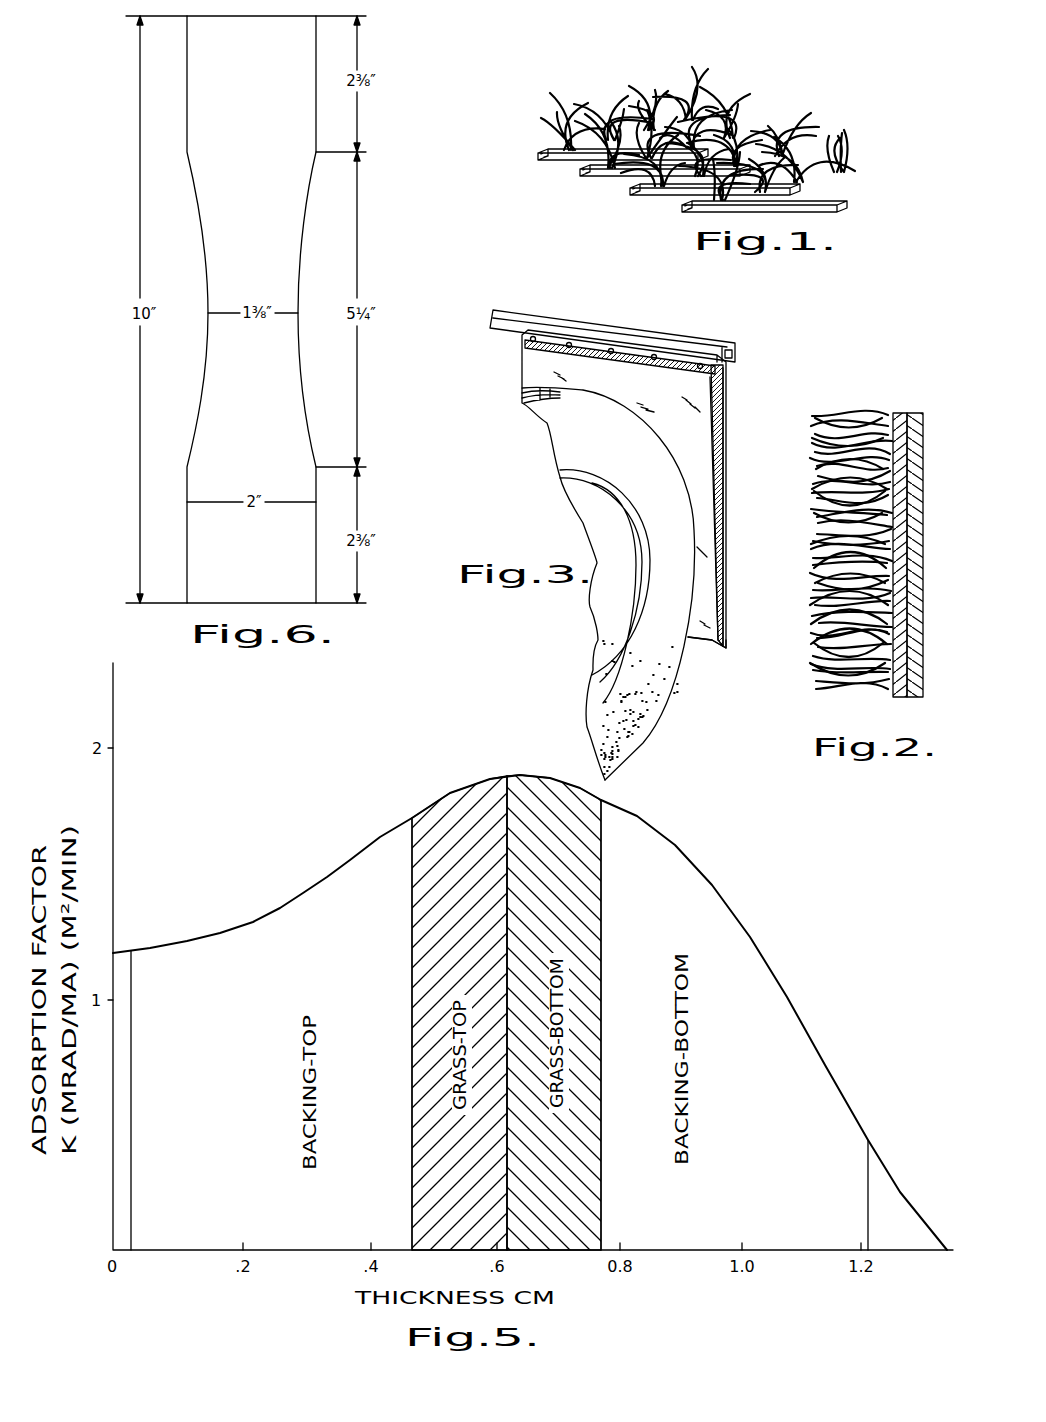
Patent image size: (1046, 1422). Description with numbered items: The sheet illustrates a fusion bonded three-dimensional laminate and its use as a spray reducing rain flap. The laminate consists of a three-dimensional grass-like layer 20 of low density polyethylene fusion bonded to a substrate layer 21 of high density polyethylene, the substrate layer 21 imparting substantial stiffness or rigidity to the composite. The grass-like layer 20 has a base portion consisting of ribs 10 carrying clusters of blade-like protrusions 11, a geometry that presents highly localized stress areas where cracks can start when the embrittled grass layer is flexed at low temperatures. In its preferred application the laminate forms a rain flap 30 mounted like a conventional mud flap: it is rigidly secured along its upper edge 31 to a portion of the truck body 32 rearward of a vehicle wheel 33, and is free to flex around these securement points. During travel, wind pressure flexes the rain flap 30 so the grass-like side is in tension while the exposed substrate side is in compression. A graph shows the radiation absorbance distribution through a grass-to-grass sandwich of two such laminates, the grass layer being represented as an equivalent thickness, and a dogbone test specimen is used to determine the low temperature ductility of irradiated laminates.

In FIG. 1, the ribs 10 is at (746, 197).
In FIG. 1, the blade-like protrusions 11 is at (835, 144).
In FIG. 1, the three-dimensional grass-like layer 20 is at (714, 126).
In FIG. 3, the three-dimensional grass-like layer 20 is at (633, 583).
In FIG. 2, the three-dimensional grass-like layer 20 is at (893, 406).
In FIG. 3, the substrate layer 21 is at (730, 647).
In FIG. 2, the substrate layer 21 is at (915, 698).
In FIG. 3, the rain flap 30 is at (633, 541).
In FIG. 3, the upper edge 31 is at (724, 398).
In FIG. 3, the truck body 32 is at (700, 339).
In FIG. 3, the vehicle wheel 33 is at (647, 723).